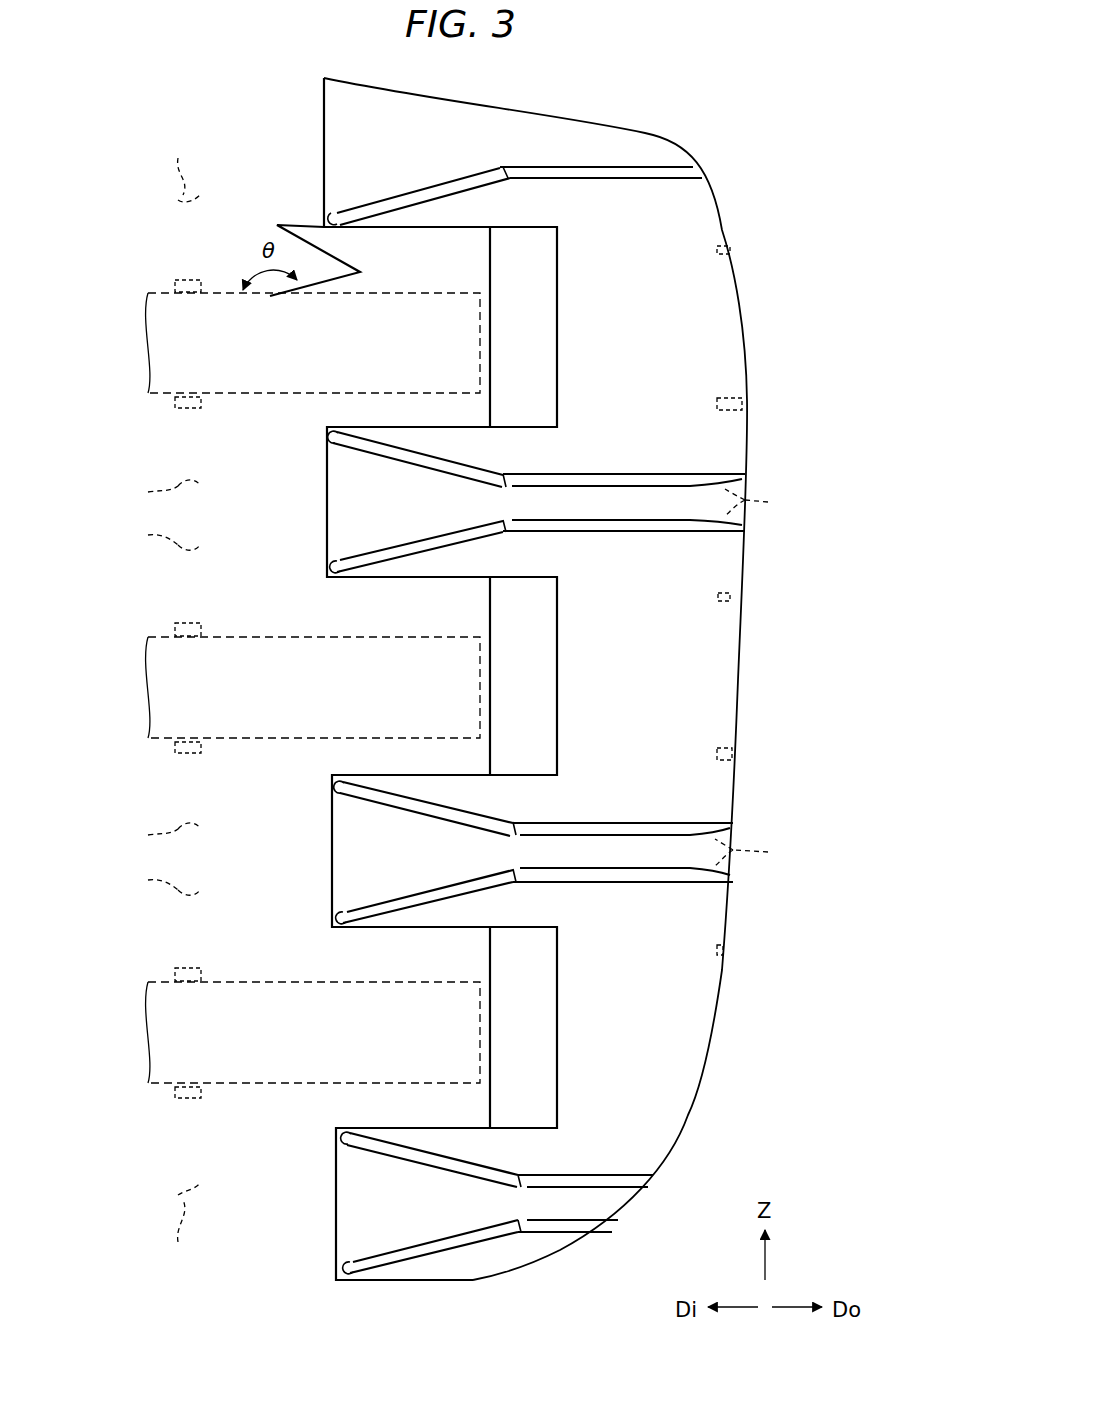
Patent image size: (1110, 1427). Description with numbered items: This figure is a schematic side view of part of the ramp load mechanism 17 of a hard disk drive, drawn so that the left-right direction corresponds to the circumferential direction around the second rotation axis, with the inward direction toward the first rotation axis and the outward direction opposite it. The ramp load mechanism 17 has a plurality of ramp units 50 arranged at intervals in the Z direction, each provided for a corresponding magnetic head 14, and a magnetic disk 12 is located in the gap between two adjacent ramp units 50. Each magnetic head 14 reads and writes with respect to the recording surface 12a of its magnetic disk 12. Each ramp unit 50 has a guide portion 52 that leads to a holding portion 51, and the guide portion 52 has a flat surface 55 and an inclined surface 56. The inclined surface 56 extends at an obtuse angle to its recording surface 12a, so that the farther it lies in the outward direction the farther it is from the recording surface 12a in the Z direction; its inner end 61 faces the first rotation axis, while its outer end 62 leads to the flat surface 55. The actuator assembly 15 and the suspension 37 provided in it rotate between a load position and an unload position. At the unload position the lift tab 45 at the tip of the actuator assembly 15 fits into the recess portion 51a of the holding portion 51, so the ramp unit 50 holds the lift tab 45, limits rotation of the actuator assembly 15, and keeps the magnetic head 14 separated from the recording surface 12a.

The magnetic disk 12 is at (148, 293).
The recording surface 12a is at (258, 691).
The magnetic head 14 is at (172, 280).
The actuator assembly 15 is at (459, 694).
The ramp load mechanism 17 is at (664, 137).
The suspension 37 is at (459, 694).
The lift tab 45 is at (459, 694).
The ramp unit 50 is at (589, 158).
The holding portion 51 is at (740, 488).
The recess portion 51a is at (673, 847).
The guide portion 52 is at (450, 180).
The flat surface 55 is at (557, 166).
The inclined surface 56 is at (376, 665).
The inner end 61 is at (333, 217).
The outer end 62 is at (502, 168).